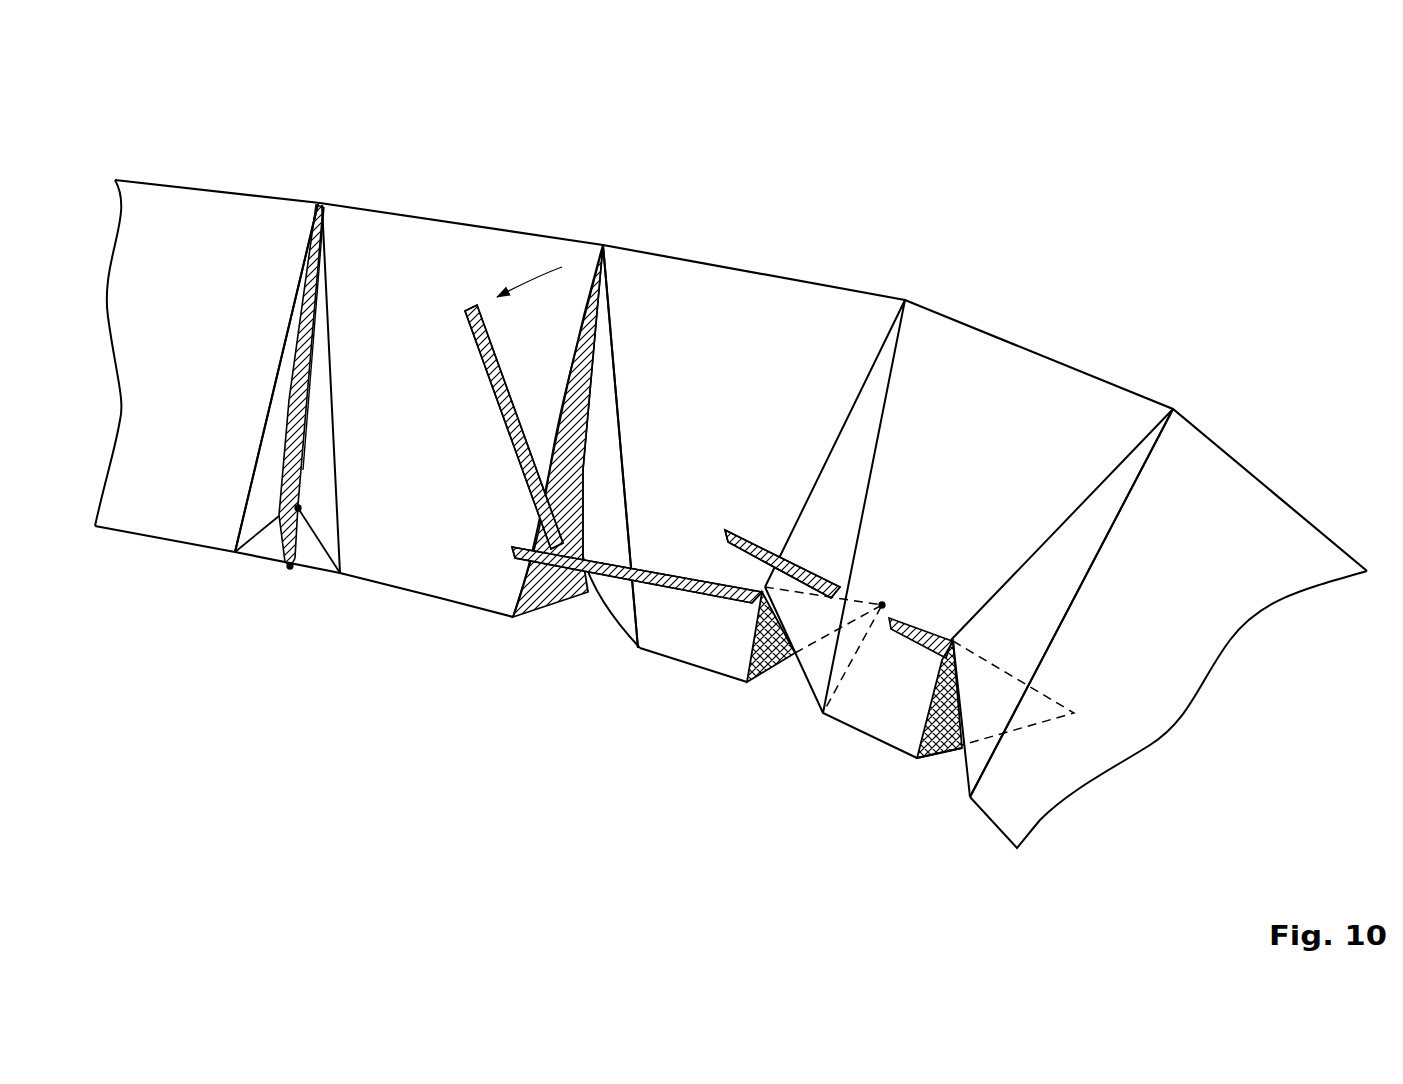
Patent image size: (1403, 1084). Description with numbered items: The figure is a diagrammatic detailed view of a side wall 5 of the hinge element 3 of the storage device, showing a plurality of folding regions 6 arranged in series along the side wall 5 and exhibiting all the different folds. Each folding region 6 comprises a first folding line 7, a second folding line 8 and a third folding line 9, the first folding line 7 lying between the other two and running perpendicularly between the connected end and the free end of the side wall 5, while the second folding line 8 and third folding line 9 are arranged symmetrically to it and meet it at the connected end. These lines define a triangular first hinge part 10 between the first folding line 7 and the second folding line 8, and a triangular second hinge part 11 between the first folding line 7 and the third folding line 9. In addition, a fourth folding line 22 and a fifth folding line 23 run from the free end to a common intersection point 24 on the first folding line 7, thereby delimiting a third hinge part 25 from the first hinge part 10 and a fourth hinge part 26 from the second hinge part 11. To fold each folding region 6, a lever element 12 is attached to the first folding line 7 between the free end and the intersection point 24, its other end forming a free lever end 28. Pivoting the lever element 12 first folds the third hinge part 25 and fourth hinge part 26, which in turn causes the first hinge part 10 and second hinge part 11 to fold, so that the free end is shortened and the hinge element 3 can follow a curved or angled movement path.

The hinge element 3 is at (167, 128).
The side wall 5 is at (905, 640).
The folding region 6 is at (295, 235).
The first folding line 7 is at (303, 432).
The second folding line 8 is at (337, 497).
The third folding line 9 is at (262, 448).
The first hinge part 10 is at (600, 405).
The second hinge part 11 is at (580, 383).
The lever element 12 is at (289, 383).
The fourth folding line 22 is at (320, 558).
The fifth folding line 23 is at (247, 553).
The intersection point 24 is at (280, 510).
The third hinge part 25 is at (607, 610).
The fourth hinge part 26 is at (555, 592).
The free lever end 28 is at (318, 197).